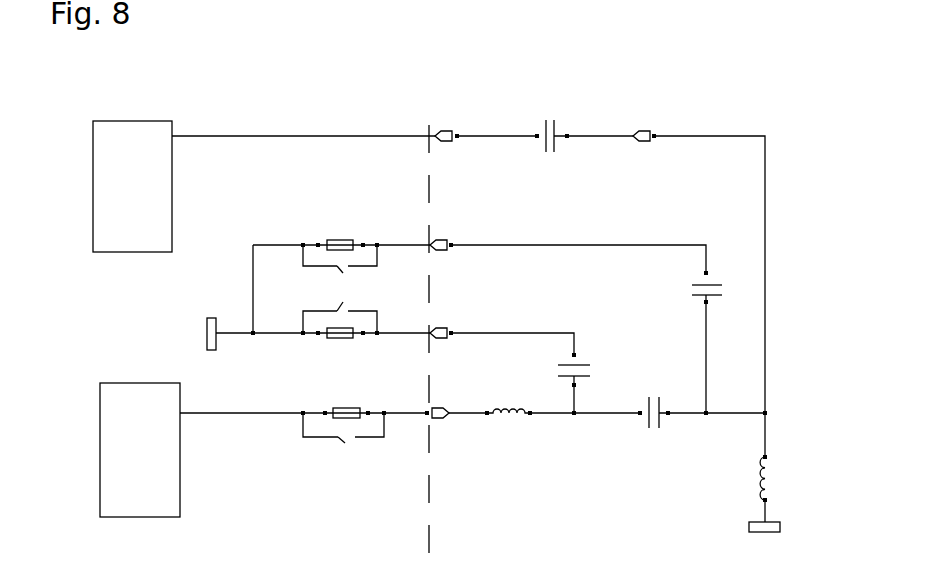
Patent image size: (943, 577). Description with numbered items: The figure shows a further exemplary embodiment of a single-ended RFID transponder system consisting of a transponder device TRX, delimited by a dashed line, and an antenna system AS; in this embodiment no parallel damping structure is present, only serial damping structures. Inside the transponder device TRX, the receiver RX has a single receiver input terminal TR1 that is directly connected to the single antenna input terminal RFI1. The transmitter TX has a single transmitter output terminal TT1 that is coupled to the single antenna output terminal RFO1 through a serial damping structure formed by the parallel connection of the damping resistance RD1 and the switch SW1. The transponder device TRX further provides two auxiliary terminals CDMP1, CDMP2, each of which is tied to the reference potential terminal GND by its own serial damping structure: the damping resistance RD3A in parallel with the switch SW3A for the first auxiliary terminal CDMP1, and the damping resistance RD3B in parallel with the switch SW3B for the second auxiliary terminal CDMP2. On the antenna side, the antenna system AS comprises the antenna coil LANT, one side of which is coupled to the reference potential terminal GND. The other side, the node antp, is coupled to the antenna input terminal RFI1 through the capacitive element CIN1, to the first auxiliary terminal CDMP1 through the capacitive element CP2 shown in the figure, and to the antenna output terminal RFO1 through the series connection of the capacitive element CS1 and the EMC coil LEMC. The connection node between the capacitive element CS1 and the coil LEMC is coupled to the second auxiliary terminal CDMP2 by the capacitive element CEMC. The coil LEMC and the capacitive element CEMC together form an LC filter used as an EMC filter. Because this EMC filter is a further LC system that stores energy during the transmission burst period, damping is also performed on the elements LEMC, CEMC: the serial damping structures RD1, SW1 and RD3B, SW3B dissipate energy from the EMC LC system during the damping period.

The transponder device TRX is at (429, 85).
The receiver RX is at (132, 186).
The transmitter TX is at (140, 450).
The receiver input terminal TR1 is at (172, 137).
The transmitter output terminal TT1 is at (180, 414).
The antenna input terminal RFI1 is at (486, 149).
The antenna output terminal RFO1 is at (461, 401).
The capacitive element CIN1 is at (584, 129).
The antenna coil side antp is at (699, 260).
The first auxiliary terminal CDMP1 is at (479, 258).
The second auxiliary terminal CDMP2 is at (395, 329).
The reference potential terminal GND is at (208, 334).
The damping resistance RD3A is at (347, 240).
The damping resistance RD3B is at (340, 338).
The damping resistance RD1 is at (347, 408).
The switch SW3A is at (342, 274).
The switch SW3B is at (342, 302).
The switch SW1 is at (345, 443).
The parallel capacitor CP2 is at (725, 343).
The capacitive element CEMC is at (603, 384).
The EMC coil LEMC is at (561, 429).
The capacitive element CS1 is at (702, 410).
The antenna coil LANT is at (797, 461).
The antenna system AS is at (567, 474).